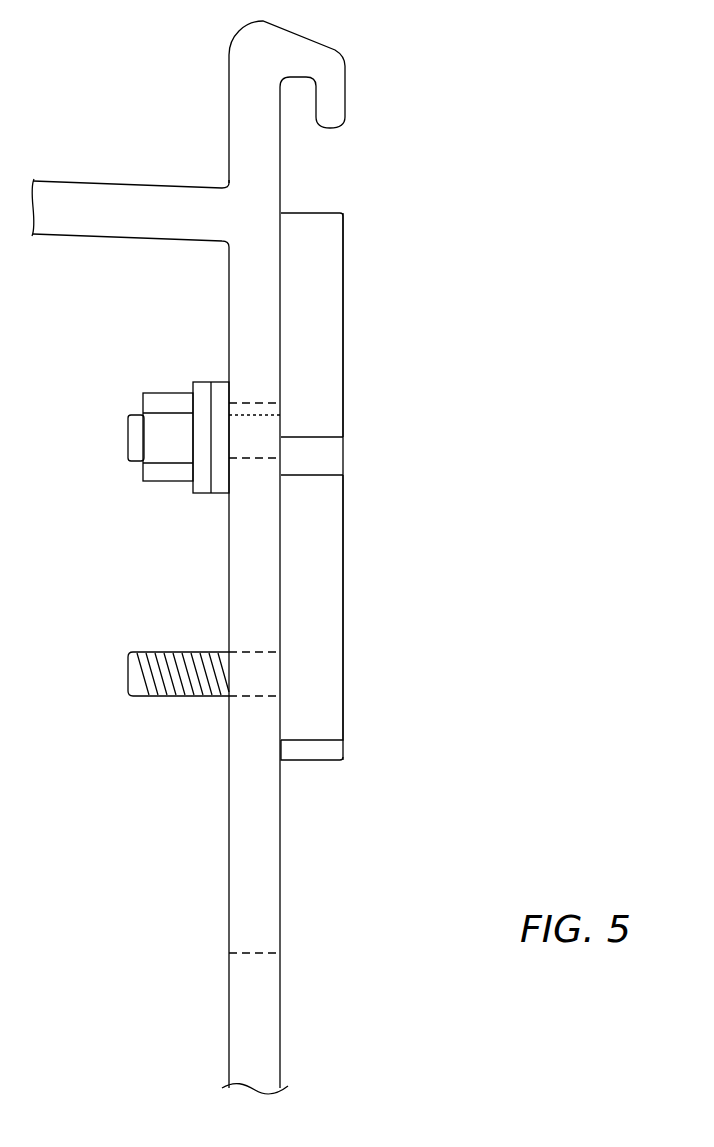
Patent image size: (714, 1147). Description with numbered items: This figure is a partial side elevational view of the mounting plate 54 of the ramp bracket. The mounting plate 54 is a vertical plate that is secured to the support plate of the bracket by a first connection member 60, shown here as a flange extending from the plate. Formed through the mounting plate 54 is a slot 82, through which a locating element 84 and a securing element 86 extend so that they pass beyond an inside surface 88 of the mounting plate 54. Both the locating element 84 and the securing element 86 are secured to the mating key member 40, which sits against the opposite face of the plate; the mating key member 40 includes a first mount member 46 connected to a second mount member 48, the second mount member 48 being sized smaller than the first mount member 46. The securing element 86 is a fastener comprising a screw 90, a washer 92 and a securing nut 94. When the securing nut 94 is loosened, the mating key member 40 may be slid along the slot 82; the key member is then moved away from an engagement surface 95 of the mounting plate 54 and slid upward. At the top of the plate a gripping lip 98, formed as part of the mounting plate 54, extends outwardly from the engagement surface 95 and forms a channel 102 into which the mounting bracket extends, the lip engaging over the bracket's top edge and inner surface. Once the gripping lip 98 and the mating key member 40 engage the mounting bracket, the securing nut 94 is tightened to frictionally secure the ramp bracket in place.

The mating key member 40 is at (357, 515).
The first mount member 46 is at (323, 682).
The second mount member 48 is at (325, 325).
The mounting plate 54 is at (258, 1012).
The first connection member 60 is at (145, 202).
The slot 82 is at (263, 950).
The locating element 84 is at (183, 678).
The securing element 86 is at (155, 449).
The inside surface 88 is at (228, 325).
The screw 90 is at (128, 436).
The washer 92 is at (220, 485).
The securing nut 94 is at (168, 402).
The engagement surface 95 is at (282, 168).
The gripping lip 98 is at (330, 108).
The channel 102 is at (295, 97).